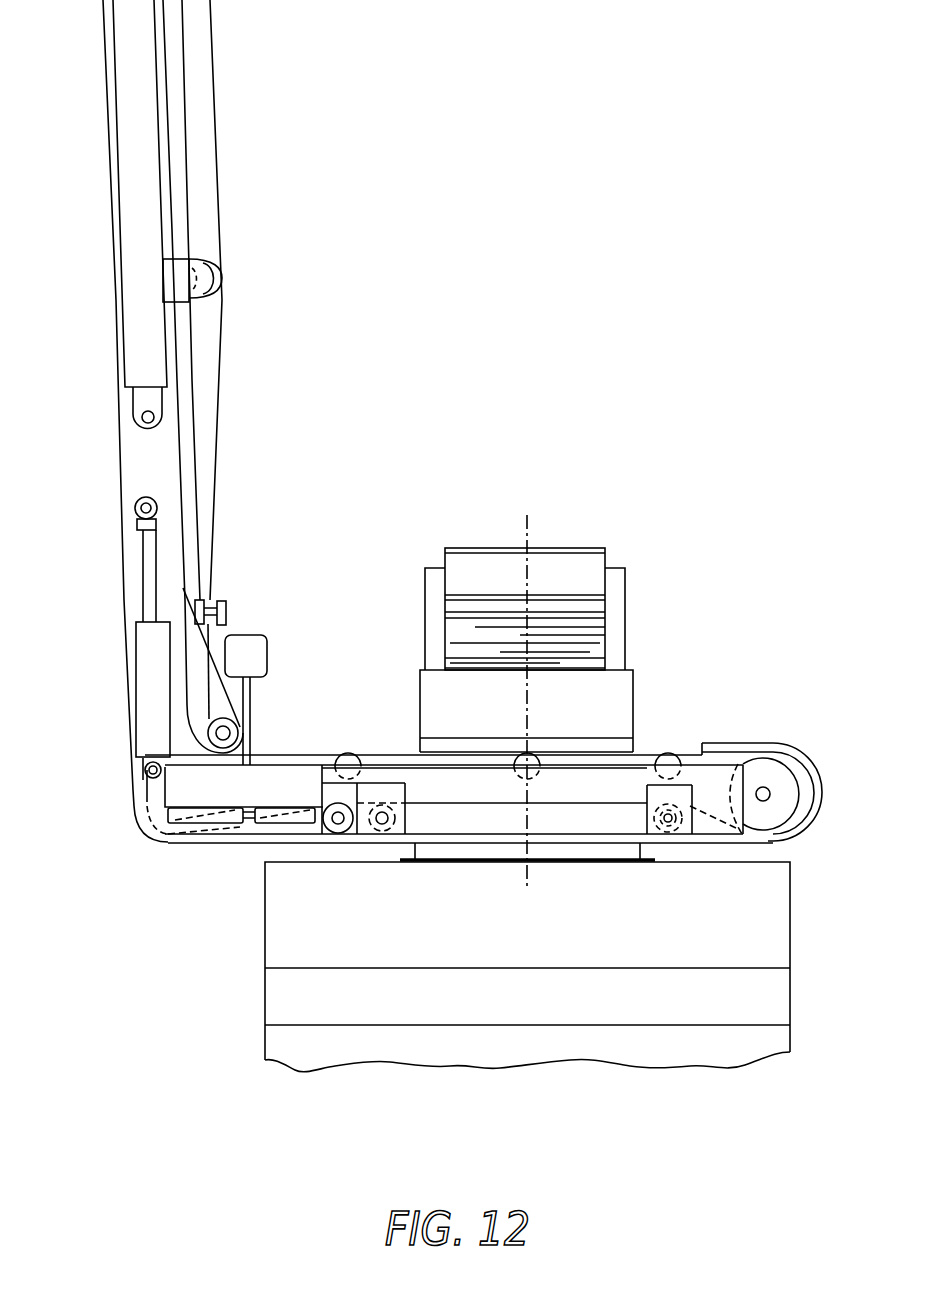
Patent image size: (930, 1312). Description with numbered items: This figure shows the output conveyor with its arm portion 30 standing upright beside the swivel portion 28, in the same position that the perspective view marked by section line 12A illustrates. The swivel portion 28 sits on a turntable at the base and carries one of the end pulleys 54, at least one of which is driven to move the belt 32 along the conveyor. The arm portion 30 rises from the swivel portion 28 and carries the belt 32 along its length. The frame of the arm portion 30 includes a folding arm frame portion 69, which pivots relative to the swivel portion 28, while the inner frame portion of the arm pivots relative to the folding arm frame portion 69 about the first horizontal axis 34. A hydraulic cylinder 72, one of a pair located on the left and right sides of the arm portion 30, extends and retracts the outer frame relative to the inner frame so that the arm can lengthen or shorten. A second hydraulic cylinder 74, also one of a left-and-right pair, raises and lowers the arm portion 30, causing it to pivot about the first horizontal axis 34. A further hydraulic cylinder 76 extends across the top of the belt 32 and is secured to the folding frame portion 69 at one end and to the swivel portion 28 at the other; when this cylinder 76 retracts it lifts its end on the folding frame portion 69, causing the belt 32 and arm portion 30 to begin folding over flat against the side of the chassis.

The section line 12A— 12A is at (310, 545).
The swivel portion 28 is at (652, 680).
The arm portion 30 is at (135, 452).
The belt 32 is at (217, 108).
The first horizontal axis 34 is at (240, 732).
The end pulley 54 is at (782, 770).
The folding arm frame portion 69 is at (253, 702).
The hydraulic cylinder 72 is at (130, 140).
The hydraulic cylinder 74 is at (147, 700).
The hydraulic cylinder 76 is at (258, 638).